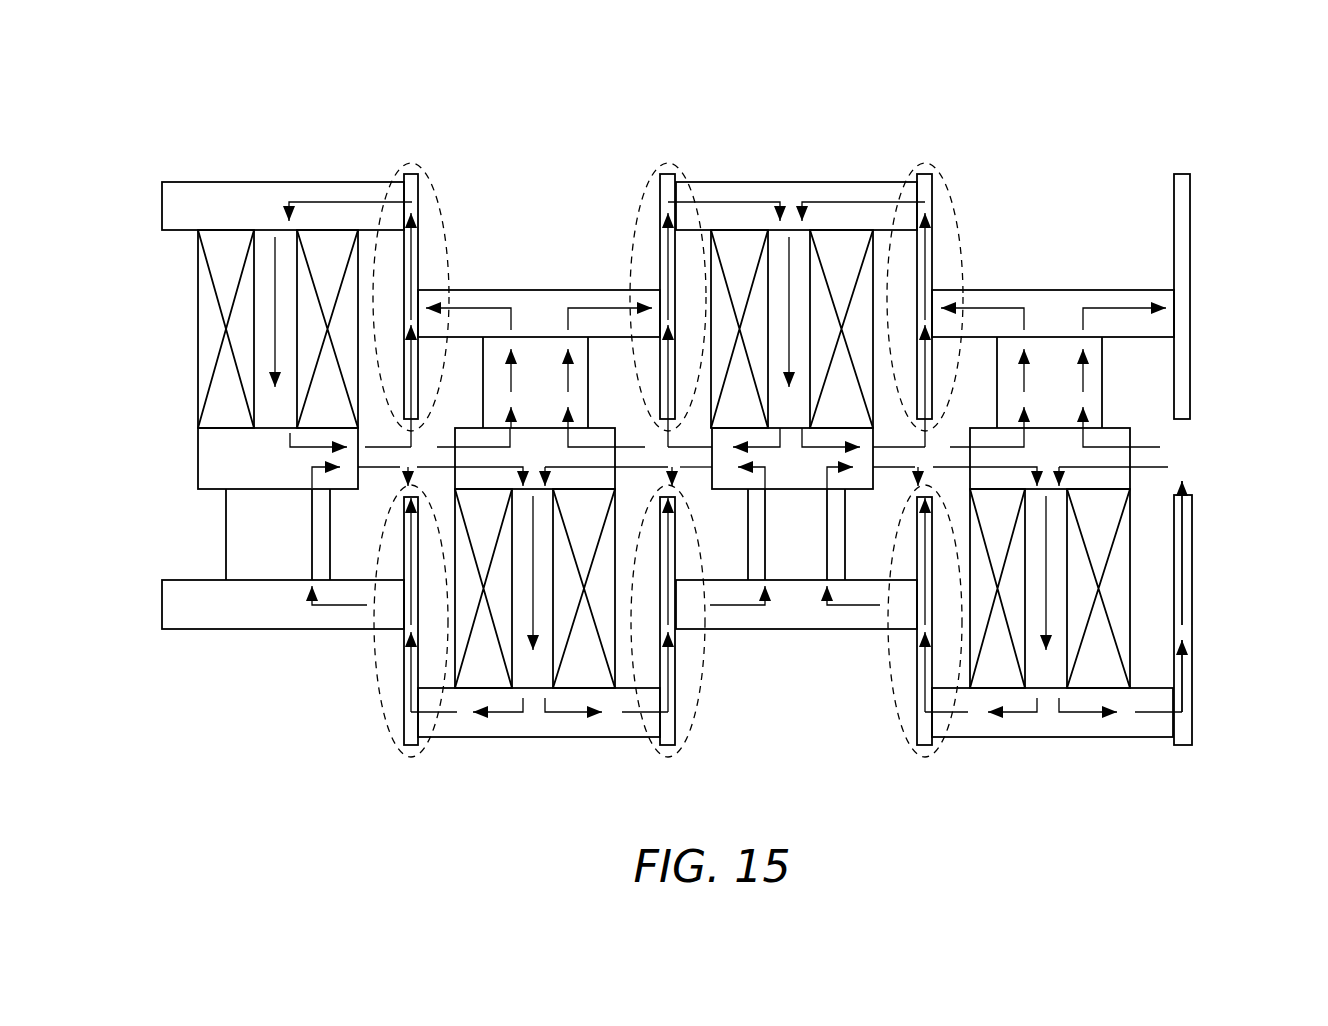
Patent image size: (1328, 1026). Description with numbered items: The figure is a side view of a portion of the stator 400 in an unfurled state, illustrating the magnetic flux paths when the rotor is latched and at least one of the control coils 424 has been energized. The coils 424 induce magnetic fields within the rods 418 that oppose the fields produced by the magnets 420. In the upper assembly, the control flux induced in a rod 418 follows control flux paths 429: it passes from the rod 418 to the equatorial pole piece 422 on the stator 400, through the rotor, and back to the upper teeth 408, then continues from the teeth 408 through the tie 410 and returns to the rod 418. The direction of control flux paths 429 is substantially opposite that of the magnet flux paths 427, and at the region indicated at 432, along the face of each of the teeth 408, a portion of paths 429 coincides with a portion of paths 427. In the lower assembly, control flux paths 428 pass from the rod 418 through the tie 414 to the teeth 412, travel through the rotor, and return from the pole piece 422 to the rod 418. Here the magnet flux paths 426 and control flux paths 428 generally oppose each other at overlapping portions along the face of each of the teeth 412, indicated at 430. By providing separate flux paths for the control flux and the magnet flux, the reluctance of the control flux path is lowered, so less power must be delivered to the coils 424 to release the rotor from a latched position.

The stator 400 is at (1224, 105).
The upper teeth 408 is at (1177, 207).
The tie 410 is at (162, 201).
The teeth 412 is at (1192, 612).
The tie 414 is at (162, 603).
The rods 418 is at (270, 406).
The magnets 420 is at (236, 531).
The equatorial pole piece 422 is at (198, 453).
The control coils 424 is at (226, 245).
The flux paths 426 is at (346, 612).
The flux paths 427 is at (476, 308).
The control flux paths 428 is at (1170, 467).
The control flux paths 429 is at (327, 200).
The shared region 430 is at (408, 758).
The shared region 432 is at (409, 162).